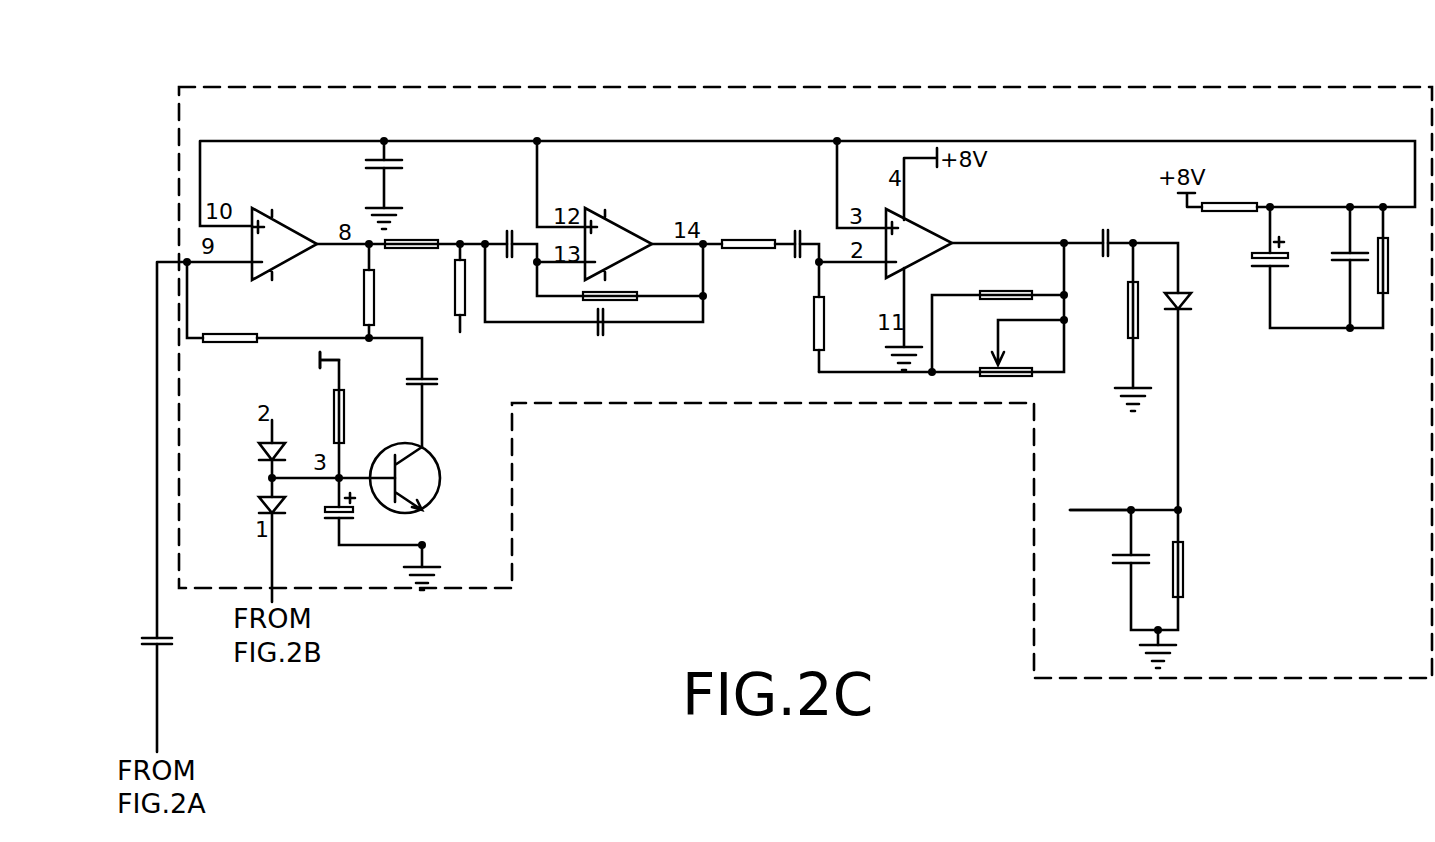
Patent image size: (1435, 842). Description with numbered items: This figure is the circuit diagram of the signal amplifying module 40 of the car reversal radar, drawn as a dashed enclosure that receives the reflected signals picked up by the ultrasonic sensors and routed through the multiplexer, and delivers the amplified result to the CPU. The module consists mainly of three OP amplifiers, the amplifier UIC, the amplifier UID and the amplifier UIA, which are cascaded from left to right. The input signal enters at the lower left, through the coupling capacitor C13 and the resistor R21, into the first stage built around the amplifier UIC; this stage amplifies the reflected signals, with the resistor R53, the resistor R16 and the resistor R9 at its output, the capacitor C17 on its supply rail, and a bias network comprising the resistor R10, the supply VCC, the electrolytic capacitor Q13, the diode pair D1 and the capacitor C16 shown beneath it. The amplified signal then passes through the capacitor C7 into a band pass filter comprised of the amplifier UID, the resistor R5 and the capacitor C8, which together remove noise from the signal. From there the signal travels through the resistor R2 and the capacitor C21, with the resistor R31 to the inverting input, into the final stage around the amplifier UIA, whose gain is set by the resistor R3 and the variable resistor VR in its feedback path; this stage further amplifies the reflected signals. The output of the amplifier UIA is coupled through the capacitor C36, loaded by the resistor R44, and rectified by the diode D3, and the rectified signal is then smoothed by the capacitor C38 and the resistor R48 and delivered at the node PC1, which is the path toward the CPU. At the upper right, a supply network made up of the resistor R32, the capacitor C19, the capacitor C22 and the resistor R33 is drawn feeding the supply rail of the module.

The signal amplifying module 40 is at (1055, 103).
The OP amplifier U1C UIC is at (287, 242).
The OP amplifier U1D UID is at (618, 241).
The OP amplifier U1A UIA is at (919, 240).
The resistor R53 is at (411, 232).
The resistor R16 is at (390, 291).
The resistor R9 is at (443, 288).
The resistor R21 is at (230, 325).
The resistor R5 is at (612, 284).
The resistor R2 is at (748, 232).
The resistor R31 is at (842, 317).
The resistor R3 is at (1006, 283).
The variable resistor VR is at (1006, 377).
The resistor R44 is at (1111, 310).
The resistor R32 is at (1230, 195).
The resistor R33 is at (1404, 280).
The resistor R48 is at (1201, 569).
The resistor R10 is at (362, 416).
The capacitor C17 is at (401, 152).
The capacitor C7 is at (495, 236).
The capacitor C8 is at (584, 318).
The capacitor C21 is at (803, 232).
The capacitor C36 is at (1109, 227).
The capacitor C19 is at (1251, 248).
The capacitor C22 is at (1335, 244).
The capacitor C38 is at (1117, 572).
The capacitor C16 is at (445, 380).
The capacitor C13 is at (174, 628).
The electrolytic capacitor Q13 is at (325, 517).
The diode pair D1 is at (258, 474).
The diode D3 is at (1191, 290).
The supply voltage VCC is at (302, 360).
The output node PC1 is at (1099, 497).